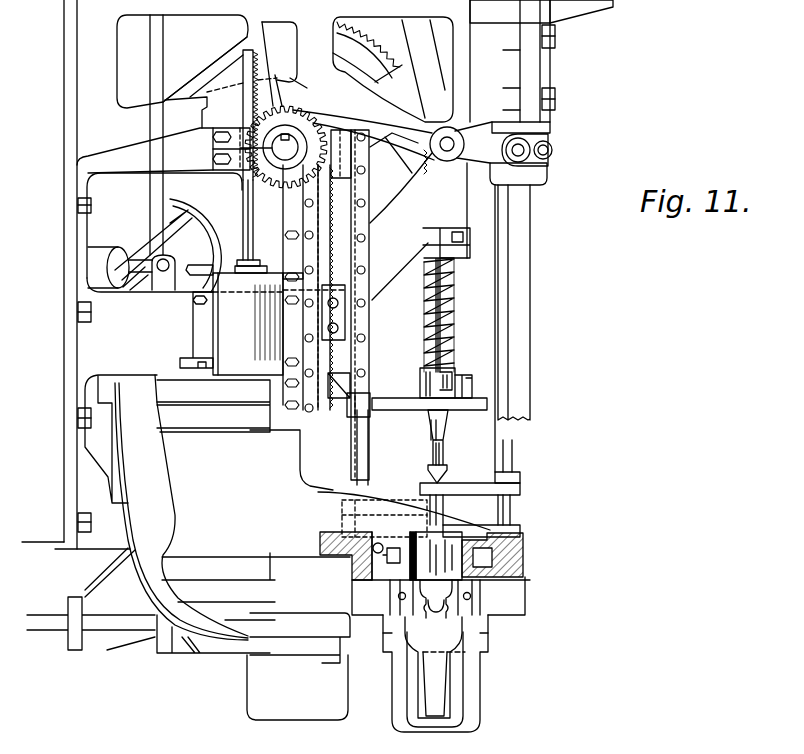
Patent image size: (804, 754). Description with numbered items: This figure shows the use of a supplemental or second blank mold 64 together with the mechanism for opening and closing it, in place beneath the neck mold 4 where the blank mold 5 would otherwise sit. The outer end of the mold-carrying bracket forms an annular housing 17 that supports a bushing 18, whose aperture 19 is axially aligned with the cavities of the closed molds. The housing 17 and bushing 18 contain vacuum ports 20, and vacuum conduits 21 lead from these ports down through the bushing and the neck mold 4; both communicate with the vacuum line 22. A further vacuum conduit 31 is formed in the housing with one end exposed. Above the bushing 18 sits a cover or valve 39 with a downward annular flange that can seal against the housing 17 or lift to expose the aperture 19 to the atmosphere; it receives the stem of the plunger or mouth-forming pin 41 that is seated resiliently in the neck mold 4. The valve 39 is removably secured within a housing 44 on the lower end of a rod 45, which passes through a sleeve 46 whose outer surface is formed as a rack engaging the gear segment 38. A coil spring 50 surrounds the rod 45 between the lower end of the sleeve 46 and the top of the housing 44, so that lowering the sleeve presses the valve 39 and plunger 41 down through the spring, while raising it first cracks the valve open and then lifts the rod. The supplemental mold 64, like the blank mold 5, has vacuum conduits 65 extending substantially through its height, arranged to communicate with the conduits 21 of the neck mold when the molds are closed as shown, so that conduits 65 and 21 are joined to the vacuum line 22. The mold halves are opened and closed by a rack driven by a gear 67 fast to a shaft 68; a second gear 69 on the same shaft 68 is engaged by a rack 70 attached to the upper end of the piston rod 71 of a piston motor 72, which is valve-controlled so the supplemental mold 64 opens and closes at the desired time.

The neck mold 4 is at (520, 585).
The blank mold 5 is at (257, 688).
The annular housing 17 is at (525, 553).
The bushing 18 is at (500, 523).
The aperture 19 is at (448, 532).
The vacuum ports 20 is at (525, 540).
The vacuum conduits 21 is at (480, 595).
The vacuum line 22 is at (497, 442).
The vacuum conduit 31 is at (378, 543).
The gear segment 38 is at (393, 200).
The cover or valve 39 is at (402, 398).
The plunger or mouth-forming pin 41 is at (443, 463).
The housing 44 is at (422, 372).
The rod 45 is at (450, 355).
The sleeve 46 is at (477, 367).
The coil spring 50 is at (452, 327).
The supplemental blank mold 64 is at (478, 695).
The vacuum conduits 65 is at (423, 727).
The gear 67 is at (295, 110).
The shaft 68 is at (213, 152).
The gear 69 is at (312, 123).
The rack 70 is at (243, 58).
The piston rod 71 is at (246, 212).
The piston motor 72 is at (227, 337).